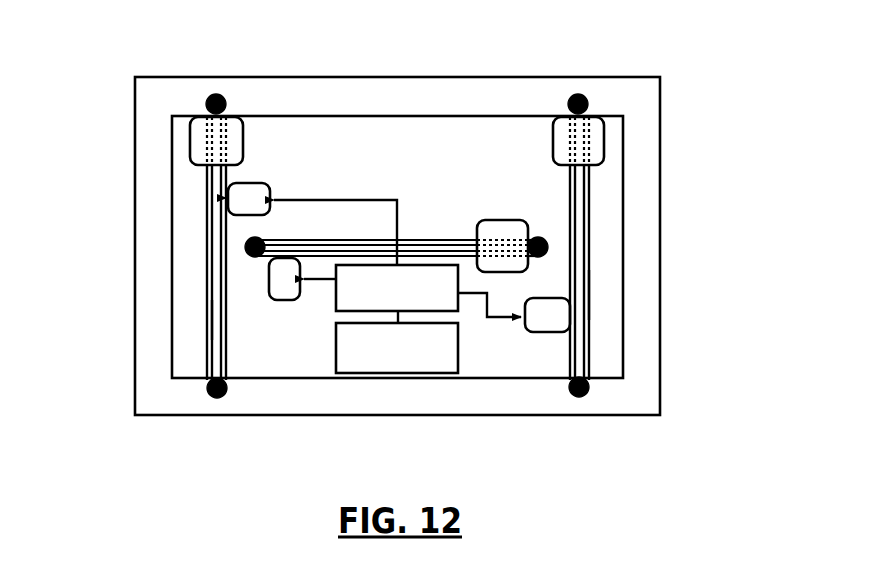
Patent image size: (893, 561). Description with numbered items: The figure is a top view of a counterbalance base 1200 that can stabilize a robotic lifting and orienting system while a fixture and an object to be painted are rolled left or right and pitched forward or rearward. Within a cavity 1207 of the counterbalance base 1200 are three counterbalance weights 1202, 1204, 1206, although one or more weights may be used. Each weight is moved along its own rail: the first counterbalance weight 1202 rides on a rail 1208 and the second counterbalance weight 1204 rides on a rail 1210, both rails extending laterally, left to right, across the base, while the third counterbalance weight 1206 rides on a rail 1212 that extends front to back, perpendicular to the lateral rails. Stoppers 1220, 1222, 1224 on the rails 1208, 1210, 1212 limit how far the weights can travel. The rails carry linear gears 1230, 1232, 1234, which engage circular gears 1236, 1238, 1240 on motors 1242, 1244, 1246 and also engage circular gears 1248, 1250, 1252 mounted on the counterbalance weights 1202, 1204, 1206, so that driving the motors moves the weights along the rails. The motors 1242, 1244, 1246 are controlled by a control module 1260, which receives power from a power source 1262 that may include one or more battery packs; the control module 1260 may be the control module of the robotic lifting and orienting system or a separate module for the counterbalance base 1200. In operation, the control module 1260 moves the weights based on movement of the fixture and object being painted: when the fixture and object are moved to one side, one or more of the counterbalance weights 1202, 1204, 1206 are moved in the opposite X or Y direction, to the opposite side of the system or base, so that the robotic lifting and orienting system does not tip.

The counterbalance base 1200 is at (135, 102).
The counterbalance weight 1202 is at (246, 140).
The counterbalance weight 1204 is at (660, 136).
The counterbalance weight 1206 is at (493, 220).
The cavity 1207 is at (172, 176).
The rail 1208 is at (207, 305).
The rail 1210 is at (590, 183).
The rail 1212 is at (420, 238).
The stopper 1220 is at (215, 95).
The stopper 1222 is at (576, 95).
The stopper 1224 is at (246, 252).
The linear gear 1230 is at (212, 332).
The linear gear 1232 is at (590, 295).
The linear gear 1234 is at (463, 240).
The circular gear 1236 is at (222, 198).
The circular gear 1238 is at (570, 333).
The circular gear 1240 is at (290, 258).
The motor 1242 is at (268, 183).
The motor 1244 is at (537, 333).
The motor 1246 is at (293, 301).
The circular gear 1248 is at (215, 141).
The circular gear 1250 is at (577, 141).
The circular gear 1252 is at (503, 248).
The control module 1260 is at (336, 312).
The power source 1262 is at (336, 365).